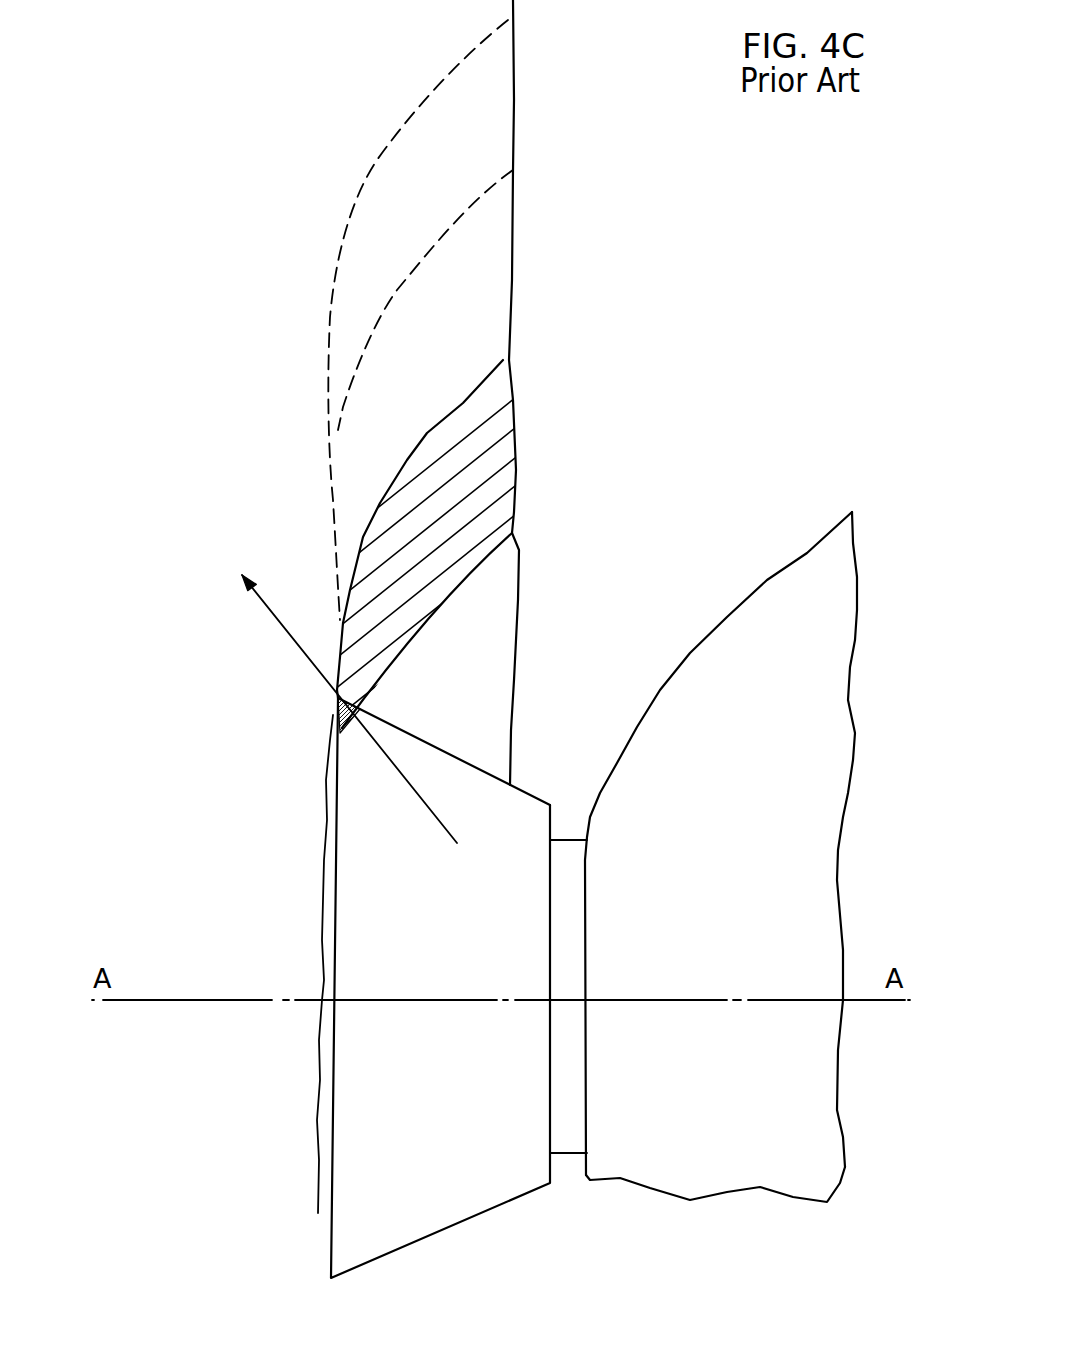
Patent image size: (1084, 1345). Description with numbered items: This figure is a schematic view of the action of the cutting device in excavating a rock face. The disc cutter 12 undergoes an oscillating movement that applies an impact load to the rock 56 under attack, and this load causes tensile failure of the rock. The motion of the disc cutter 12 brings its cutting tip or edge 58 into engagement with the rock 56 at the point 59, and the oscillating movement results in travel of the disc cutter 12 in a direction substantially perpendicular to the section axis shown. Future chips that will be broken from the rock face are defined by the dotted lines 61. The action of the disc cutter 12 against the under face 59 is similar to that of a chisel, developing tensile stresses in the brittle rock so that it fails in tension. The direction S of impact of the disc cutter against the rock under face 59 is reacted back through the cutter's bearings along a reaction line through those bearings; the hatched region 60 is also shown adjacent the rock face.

The disc cutter 12 is at (478, 1178).
The rock 56 is at (512, 280).
The cutting tip or edge 58 is at (330, 718).
The point of engagement (rock under face) 59 is at (338, 698).
The rubbed region 60 is at (468, 472).
The dotted lines defining future chips 61 is at (407, 277).
The direction of impact S is at (395, 767).